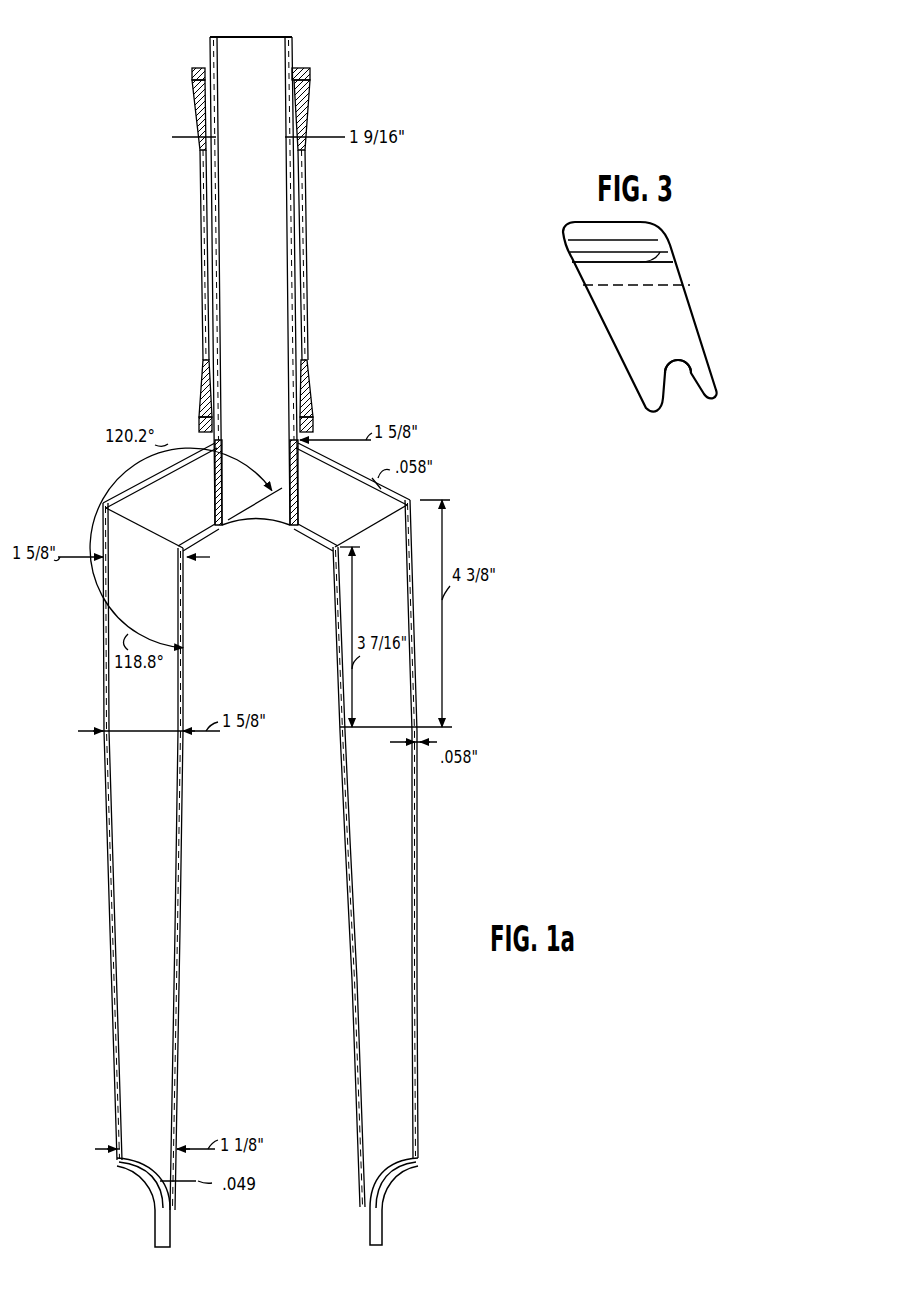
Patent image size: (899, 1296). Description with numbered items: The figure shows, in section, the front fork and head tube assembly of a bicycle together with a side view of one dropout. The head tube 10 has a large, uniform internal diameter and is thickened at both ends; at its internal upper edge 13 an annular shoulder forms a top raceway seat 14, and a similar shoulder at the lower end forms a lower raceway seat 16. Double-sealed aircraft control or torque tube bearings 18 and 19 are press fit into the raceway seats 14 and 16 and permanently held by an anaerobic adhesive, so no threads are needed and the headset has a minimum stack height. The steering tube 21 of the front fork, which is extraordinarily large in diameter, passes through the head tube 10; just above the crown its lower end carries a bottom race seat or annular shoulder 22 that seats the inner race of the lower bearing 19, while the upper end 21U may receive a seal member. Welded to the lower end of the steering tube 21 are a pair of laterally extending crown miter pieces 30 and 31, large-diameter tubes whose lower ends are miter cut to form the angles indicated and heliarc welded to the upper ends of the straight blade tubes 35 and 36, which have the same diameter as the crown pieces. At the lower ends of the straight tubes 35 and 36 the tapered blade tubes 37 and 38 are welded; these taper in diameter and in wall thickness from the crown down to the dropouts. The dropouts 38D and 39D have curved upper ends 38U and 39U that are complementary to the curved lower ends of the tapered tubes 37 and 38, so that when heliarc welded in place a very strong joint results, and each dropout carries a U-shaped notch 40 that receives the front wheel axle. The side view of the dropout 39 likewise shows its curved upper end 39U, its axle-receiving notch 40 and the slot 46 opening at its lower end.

In FIG. 1A, the head tube 10 is at (307, 221).
In FIG. 1A, the internal upper edge 13 is at (305, 68).
In FIG. 1A, the top raceway seat 14 is at (194, 89).
In FIG. 1A, the lower raceway seat 16 is at (309, 416).
In FIG. 1A, the upper torque tube bearing 18 is at (196, 68).
In FIG. 1A, the lower torque tube bearing 19 is at (290, 397).
In FIG. 1A, the steering tube 21 is at (293, 281).
In FIG. 1A, the upper end of steering tube 21U is at (290, 41).
In FIG. 1A, the bottom race seat 22 is at (222, 443).
In FIG. 1A, the crown miter piece 30 is at (104, 486).
In FIG. 1A, the crown miter piece 31 is at (332, 467).
In FIG. 1A, the straight blade tube 35 is at (338, 672).
In FIG. 1A, the straight blade tube 36 is at (188, 691).
In FIG. 1A, the tapered blade tube 37 is at (421, 898).
In FIG. 1A, the tapered blade tube 38 is at (107, 897).
In FIG. 1A, the upper end of dropout 38U is at (128, 1170).
In FIG. 1A, the dropout 38D is at (155, 1233).
In FIG. 3, the right dropout 39 is at (657, 293).
In FIG. 1A, the upper end of dropout 39U is at (405, 1168).
In FIG. 3, the upper end of dropout 39U is at (662, 264).
In FIG. 1A, the dropout 39D is at (383, 1237).
In FIG. 3, the U-shaped notch 40 is at (657, 318).
In FIG. 3, the axle slot 46 is at (688, 378).